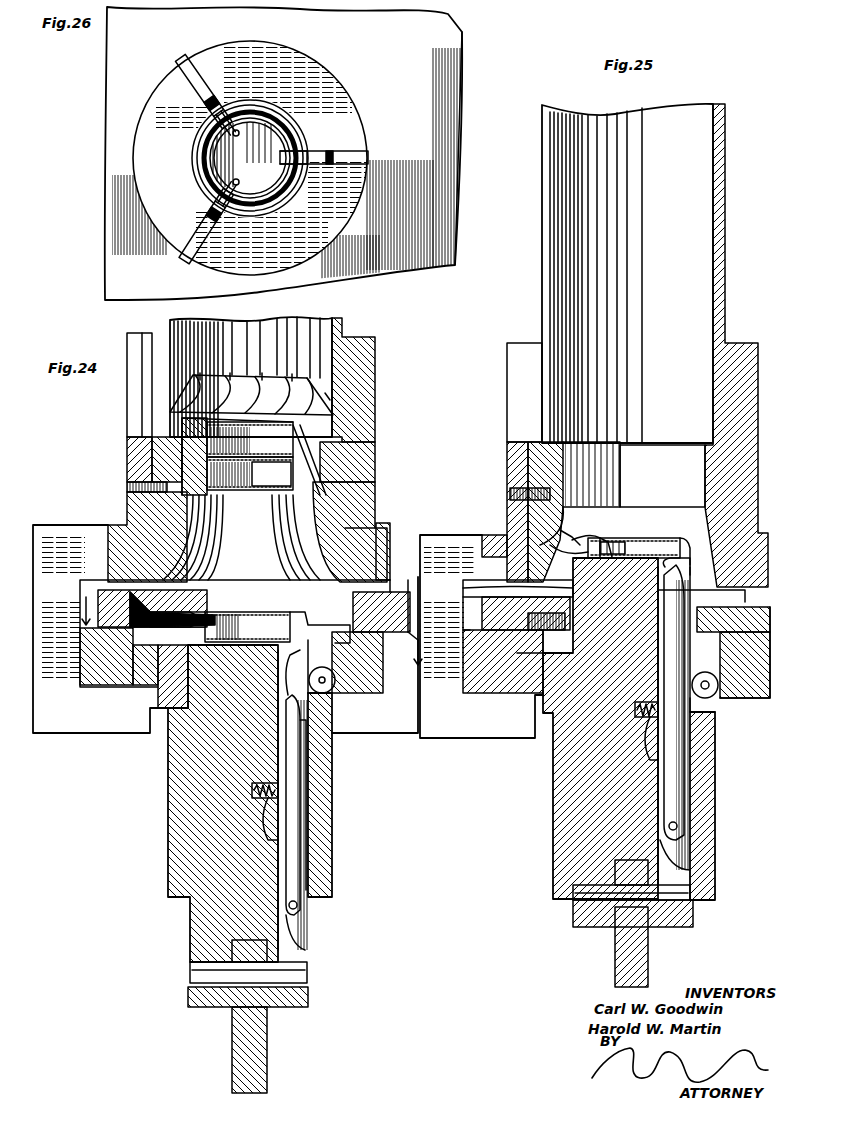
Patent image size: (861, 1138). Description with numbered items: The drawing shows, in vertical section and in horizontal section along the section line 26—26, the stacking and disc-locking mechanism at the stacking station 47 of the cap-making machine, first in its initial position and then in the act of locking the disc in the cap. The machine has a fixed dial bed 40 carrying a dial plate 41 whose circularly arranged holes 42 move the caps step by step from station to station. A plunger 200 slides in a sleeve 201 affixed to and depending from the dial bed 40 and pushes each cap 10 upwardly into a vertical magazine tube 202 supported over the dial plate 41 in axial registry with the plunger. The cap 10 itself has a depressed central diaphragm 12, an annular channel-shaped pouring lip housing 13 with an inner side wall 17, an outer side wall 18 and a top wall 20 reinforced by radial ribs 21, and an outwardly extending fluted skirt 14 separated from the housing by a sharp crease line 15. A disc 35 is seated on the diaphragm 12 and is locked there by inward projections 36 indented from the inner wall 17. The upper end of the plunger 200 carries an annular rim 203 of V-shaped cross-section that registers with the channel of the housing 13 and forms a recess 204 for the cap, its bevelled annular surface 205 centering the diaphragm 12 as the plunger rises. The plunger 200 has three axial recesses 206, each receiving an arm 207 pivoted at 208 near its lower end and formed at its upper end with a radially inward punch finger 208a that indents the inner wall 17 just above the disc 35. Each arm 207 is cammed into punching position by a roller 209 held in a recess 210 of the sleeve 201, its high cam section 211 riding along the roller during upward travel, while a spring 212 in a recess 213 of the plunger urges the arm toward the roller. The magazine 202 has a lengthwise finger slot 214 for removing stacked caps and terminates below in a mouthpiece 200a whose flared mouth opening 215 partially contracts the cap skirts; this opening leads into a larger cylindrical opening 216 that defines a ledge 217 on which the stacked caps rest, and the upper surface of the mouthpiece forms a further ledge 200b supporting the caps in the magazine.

In FIG. 25, the cap 10 is at (535, 540).
In FIG. 24, the cap 10 is at (334, 397).
In FIG. 25, the diaphragm 12 is at (482, 625).
In FIG. 24, the diaphragm 12 is at (230, 505).
In FIG. 25, the pouring lip housing 13 is at (595, 545).
In FIG. 24, the pouring lip housing 13 is at (300, 432).
In FIG. 25, the fluted skirt 14 is at (560, 555).
In FIG. 24, the fluted skirt 14 is at (160, 615).
In FIG. 25, the crease line 15 is at (560, 530).
In FIG. 25, the inner side housing wall 17 is at (612, 545).
In FIG. 24, the inner side housing wall 17 is at (140, 455).
In FIG. 24, the outer side wall 18 is at (296, 440).
In FIG. 24, the top wall 20 is at (296, 462).
In FIG. 24, the radial ribs 21 is at (242, 385).
In FIG. 24, the section line 26 is at (234, 640).
In FIG. 25, the disc 35 is at (630, 548).
In FIG. 24, the disc 35 is at (265, 500).
In FIG. 25, the inward projections 36 is at (672, 540).
In FIG. 24, the inward projections 36 is at (238, 472).
In FIG. 26, the dial bed 40 is at (449, 90).
In FIG. 25, the dial bed 40 is at (490, 700).
In FIG. 24, the dial bed 40 is at (380, 692).
In FIG. 24, the dial plate 41 is at (392, 598).
In FIG. 25, the holes 42 is at (733, 652).
In FIG. 24, the holes 42 is at (348, 622).
In FIG. 24, the stacking station 47 is at (372, 330).
In FIG. 25, the plunger 200 is at (572, 857).
In FIG. 24, the plunger 200 is at (196, 853).
In FIG. 24, the mouthpiece 200a is at (155, 519).
In FIG. 24, the ledge 200b is at (160, 436).
In FIG. 26, the sleeve 201 is at (288, 262).
In FIG. 25, the sleeve 201 is at (655, 540).
In FIG. 24, the sleeve 201 is at (322, 830).
In FIG. 25, the magazine tube 202 is at (506, 398).
In FIG. 24, the magazine tube 202 is at (370, 352).
In FIG. 26, the annular rim 203 is at (208, 170).
In FIG. 25, the annular rim 203 is at (470, 597).
In FIG. 24, the annular rim 203 is at (190, 635).
In FIG. 26, the recess 204 is at (268, 128).
In FIG. 24, the recess 204 is at (250, 608).
In FIG. 26, the bevelled annular surface 205 is at (213, 182).
In FIG. 24, the bevelled annular surface 205 is at (180, 630).
In FIG. 26, the recesses 206 is at (228, 140).
In FIG. 25, the recesses 206 is at (690, 852).
In FIG. 24, the recesses 206 is at (307, 942).
In FIG. 26, the arms 207 is at (215, 122).
In FIG. 25, the arms 207 is at (674, 800).
In FIG. 24, the arms 207 is at (297, 880).
In FIG. 25, the pivot 208 is at (680, 826).
In FIG. 24, the pivot 208 is at (300, 906).
In FIG. 25, the punch finger 208a is at (702, 580).
In FIG. 24, the punch finger 208a is at (298, 735).
In FIG. 26, the roller 209 is at (205, 100).
In FIG. 25, the roller 209 is at (708, 705).
In FIG. 24, the roller 209 is at (330, 700).
In FIG. 26, the recess 210 is at (190, 62).
In FIG. 25, the recess 210 is at (718, 696).
In FIG. 24, the recess 210 is at (338, 695).
In FIG. 25, the high cam section 211 is at (660, 722).
In FIG. 24, the high cam section 211 is at (292, 805).
In FIG. 25, the spring 212 is at (648, 740).
In FIG. 24, the spring 212 is at (282, 790).
In FIG. 25, the recess 213 is at (665, 760).
In FIG. 24, the recess 213 is at (296, 852).
In FIG. 25, the finger slot 214 is at (538, 310).
In FIG. 24, the finger slot 214 is at (165, 395).
In FIG. 25, the flared mouth opening 215 is at (484, 548).
In FIG. 24, the flared mouth opening 215 is at (358, 527).
In FIG. 25, the cylindrical opening 216 is at (506, 458).
In FIG. 24, the cylindrical opening 216 is at (345, 478).
In FIG. 25, the ledge 217 is at (565, 520).
In FIG. 24, the ledge 217 is at (352, 500).